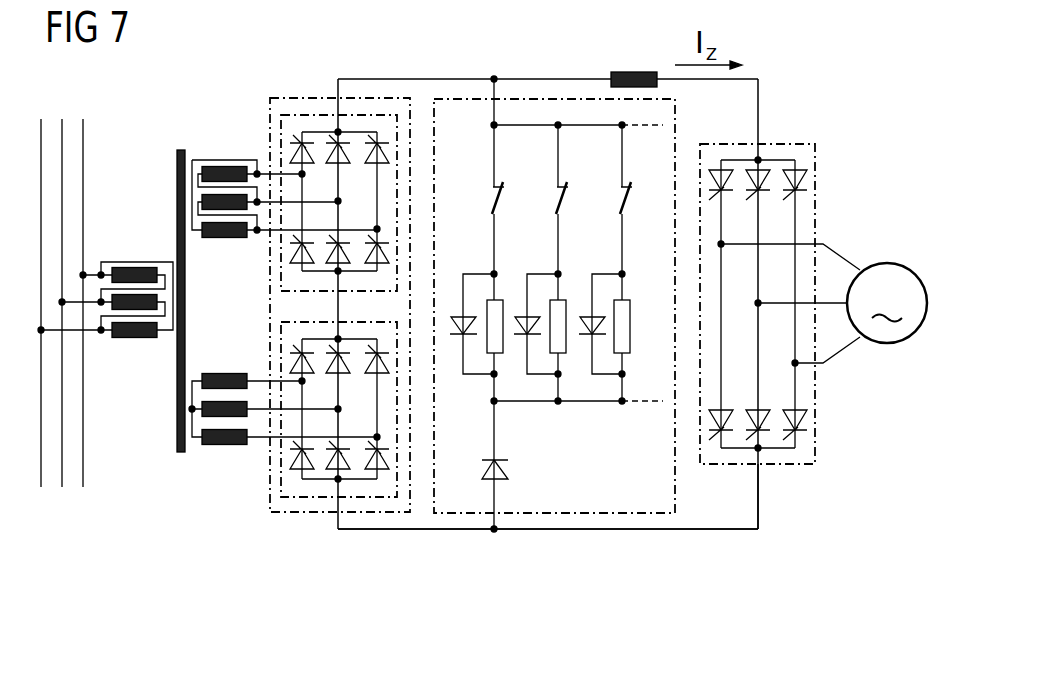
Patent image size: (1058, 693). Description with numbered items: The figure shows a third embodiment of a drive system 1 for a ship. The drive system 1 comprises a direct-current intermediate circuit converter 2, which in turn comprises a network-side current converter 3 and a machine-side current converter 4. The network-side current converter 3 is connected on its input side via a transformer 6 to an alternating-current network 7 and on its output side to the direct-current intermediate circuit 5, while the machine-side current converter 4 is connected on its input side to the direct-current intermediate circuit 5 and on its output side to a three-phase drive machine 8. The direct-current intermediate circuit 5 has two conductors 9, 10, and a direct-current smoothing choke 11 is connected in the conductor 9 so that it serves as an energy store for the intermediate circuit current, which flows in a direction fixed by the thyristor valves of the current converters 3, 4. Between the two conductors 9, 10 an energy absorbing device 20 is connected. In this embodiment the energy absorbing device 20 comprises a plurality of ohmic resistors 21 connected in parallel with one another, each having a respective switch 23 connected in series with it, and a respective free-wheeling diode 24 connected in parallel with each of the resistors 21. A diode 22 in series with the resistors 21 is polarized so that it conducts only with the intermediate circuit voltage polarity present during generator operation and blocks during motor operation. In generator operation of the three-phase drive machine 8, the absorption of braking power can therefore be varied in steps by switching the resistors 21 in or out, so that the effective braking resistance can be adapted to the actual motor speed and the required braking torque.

The drive system 1 is at (790, 68).
The direct-current intermediate circuit converter 2 is at (820, 525).
The network-side current converter 3 is at (298, 98).
The machine-side current converter 4 is at (817, 201).
The direct-current intermediate circuit 5 is at (425, 548).
The transformer 6 is at (177, 433).
The alternating-current network 7 is at (85, 468).
The three-phase drive machine 8 is at (882, 264).
The conductor 9 is at (585, 78).
The conductor 10 is at (528, 531).
The direct-current smoothing choke 11 is at (635, 71).
The energy absorbing device 20 is at (541, 98).
The ohmic resistor 21 is at (498, 298).
The diode 22 is at (508, 470).
The switch 23 is at (492, 203).
The free-wheeling diode 24 is at (472, 340).